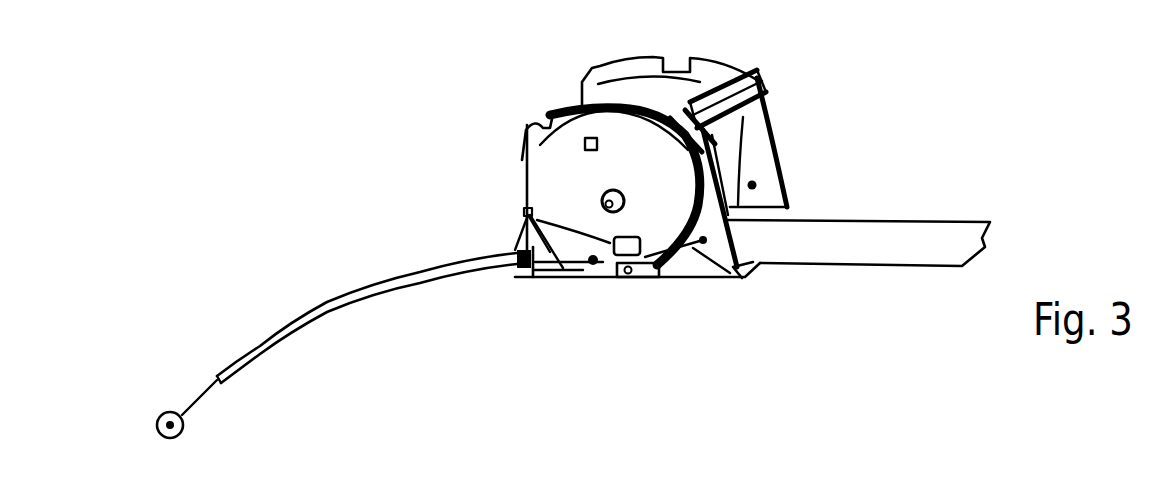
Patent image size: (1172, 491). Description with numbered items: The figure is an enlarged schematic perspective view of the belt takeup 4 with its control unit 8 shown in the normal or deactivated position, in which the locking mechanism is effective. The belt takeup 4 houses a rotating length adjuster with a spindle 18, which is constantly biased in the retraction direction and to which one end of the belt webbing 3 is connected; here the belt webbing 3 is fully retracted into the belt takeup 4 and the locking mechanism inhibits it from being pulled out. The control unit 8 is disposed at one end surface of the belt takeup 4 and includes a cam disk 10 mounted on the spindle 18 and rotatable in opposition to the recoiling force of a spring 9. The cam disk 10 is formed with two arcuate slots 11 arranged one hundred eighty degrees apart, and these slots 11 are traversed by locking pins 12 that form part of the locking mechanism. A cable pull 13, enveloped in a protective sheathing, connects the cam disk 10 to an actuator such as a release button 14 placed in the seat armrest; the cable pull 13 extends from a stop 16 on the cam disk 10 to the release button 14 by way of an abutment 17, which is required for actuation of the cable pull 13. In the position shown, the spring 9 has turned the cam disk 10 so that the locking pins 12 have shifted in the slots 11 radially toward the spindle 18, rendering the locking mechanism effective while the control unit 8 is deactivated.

The belt webbing 3 is at (884, 235).
The belt takeup 4 is at (498, 113).
The control unit 8 is at (605, 284).
The spring 9 is at (738, 278).
The cam disk 10 is at (580, 197).
The arcuate slots 11 is at (571, 107).
The locking pins 12 is at (524, 213).
The cable pull 13 is at (544, 278).
The release button 14 is at (160, 413).
The stop 16 is at (593, 264).
The abutment 17 is at (528, 279).
The spindle 18 is at (601, 198).